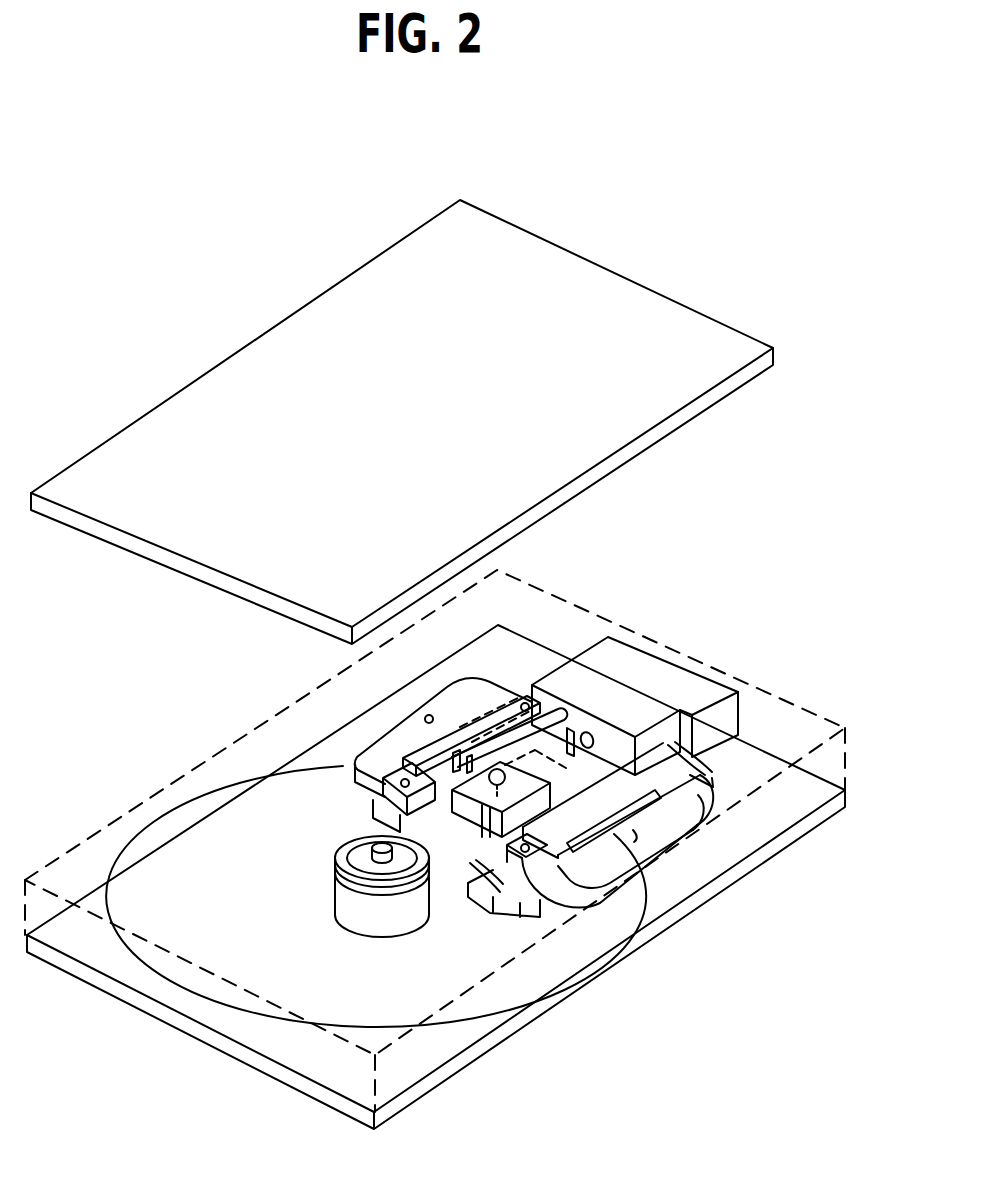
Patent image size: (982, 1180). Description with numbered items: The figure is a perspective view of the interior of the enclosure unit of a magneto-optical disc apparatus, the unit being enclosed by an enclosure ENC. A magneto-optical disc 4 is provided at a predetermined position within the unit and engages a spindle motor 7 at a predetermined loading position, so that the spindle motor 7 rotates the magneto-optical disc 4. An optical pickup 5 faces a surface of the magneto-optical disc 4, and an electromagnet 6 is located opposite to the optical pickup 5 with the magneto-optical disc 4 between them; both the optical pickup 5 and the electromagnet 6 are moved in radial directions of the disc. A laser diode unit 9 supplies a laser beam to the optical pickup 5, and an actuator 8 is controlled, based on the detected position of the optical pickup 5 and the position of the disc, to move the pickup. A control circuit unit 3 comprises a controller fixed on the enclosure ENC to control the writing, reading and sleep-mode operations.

The control circuit unit 3 is at (636, 301).
The magneto-optical disc 4 is at (320, 792).
The optical pickup 5 is at (452, 818).
The electromagnet 6 is at (672, 887).
The spindle motor 7 is at (365, 922).
The actuator 8 is at (440, 740).
The laser diode unit 9 is at (665, 678).
The enclosure ENC is at (787, 693).